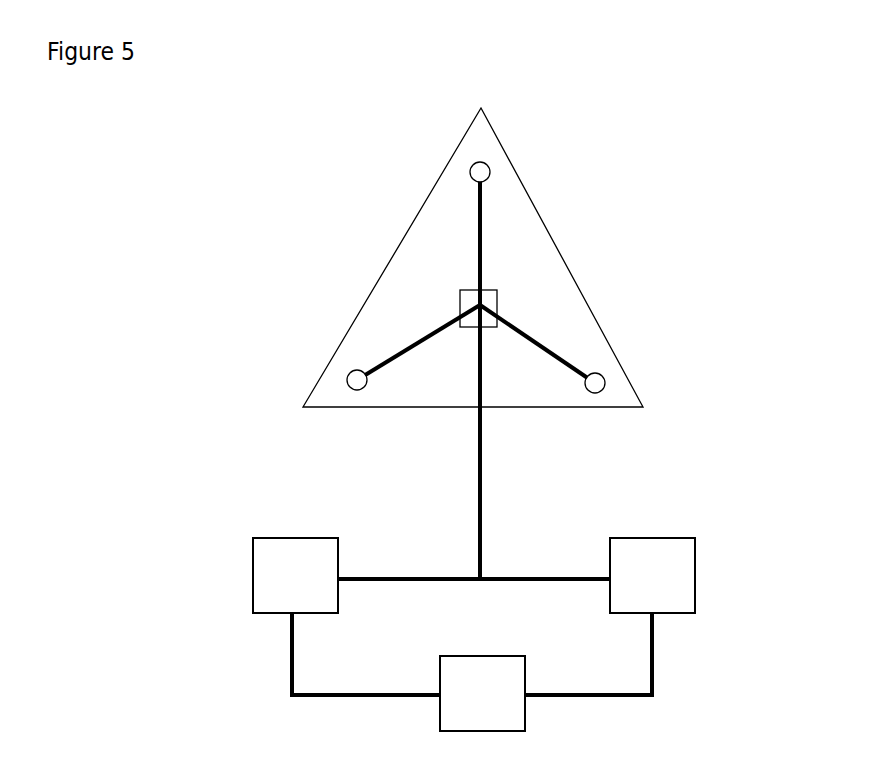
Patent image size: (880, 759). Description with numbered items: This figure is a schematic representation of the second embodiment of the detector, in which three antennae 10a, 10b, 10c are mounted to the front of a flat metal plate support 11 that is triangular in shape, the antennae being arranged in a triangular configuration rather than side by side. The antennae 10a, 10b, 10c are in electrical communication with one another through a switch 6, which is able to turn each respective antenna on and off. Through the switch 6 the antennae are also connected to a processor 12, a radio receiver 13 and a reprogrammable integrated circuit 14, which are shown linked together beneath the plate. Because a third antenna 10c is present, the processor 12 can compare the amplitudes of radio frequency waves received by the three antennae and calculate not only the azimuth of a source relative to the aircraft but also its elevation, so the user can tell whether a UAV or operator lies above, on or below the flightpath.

The switch 6 is at (465, 290).
The antenna 10a is at (359, 365).
The antenna 10b is at (589, 369).
The antenna 10c is at (470, 178).
The plate support 11 is at (537, 260).
The processor 12 is at (306, 588).
The radio receiver 13 is at (665, 588).
The reprogrammable integrated circuit 14 is at (491, 709).